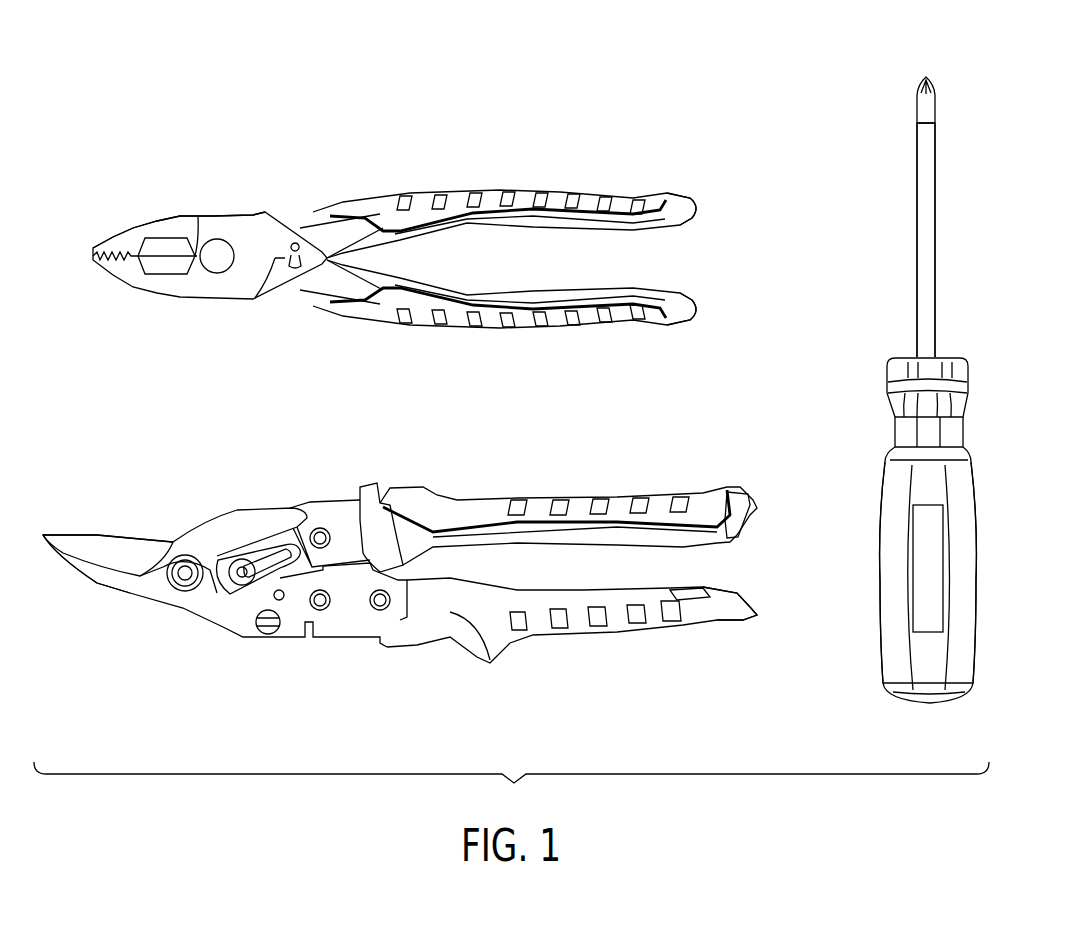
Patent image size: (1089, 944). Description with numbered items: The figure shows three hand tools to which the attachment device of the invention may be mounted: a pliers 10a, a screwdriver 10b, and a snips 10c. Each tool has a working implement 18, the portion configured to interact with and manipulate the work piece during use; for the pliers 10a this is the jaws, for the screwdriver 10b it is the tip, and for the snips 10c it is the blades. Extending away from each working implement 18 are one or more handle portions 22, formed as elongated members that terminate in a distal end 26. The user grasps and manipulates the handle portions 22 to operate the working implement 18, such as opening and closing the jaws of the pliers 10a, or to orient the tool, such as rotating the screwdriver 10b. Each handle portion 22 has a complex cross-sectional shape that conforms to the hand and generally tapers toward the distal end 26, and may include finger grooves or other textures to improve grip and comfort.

The pliers 10a is at (338, 143).
The screwdriver 10b is at (1001, 310).
The snips 10c is at (274, 681).
The working implement 18 is at (168, 230).
The handle portion 22 is at (560, 192).
The distal end 26 is at (700, 205).